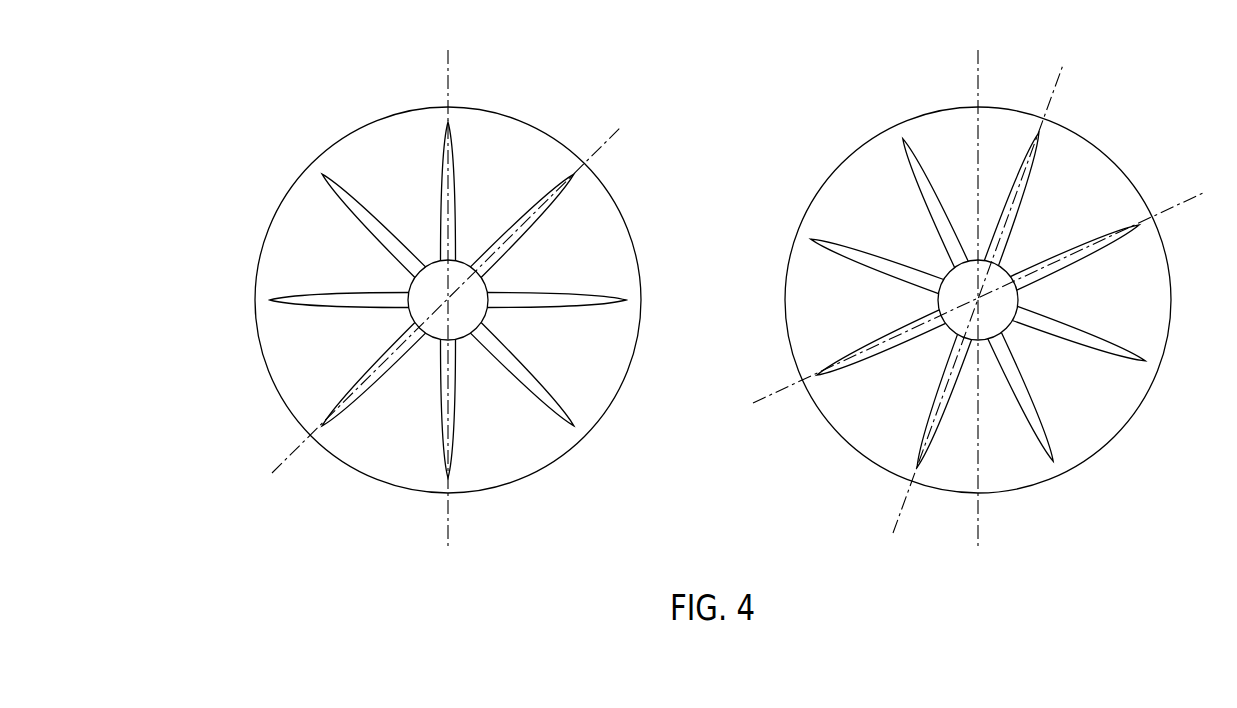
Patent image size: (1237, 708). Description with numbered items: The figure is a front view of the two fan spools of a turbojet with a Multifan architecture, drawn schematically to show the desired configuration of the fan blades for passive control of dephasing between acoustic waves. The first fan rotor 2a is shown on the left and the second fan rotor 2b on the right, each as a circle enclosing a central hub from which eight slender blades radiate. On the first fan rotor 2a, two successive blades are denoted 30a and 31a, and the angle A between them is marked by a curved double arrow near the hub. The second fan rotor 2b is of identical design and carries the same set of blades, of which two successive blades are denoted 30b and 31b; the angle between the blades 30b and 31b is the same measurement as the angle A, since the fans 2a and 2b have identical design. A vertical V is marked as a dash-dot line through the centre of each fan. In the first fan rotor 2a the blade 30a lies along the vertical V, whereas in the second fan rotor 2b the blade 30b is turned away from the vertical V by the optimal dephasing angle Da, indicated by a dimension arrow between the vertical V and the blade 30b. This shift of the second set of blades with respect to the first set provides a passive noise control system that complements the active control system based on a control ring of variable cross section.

The first fan rotor 2a is at (245, 174).
The second fan rotor 2b is at (796, 164).
The blade 30a is at (459, 136).
The blade 31a is at (578, 199).
The blade 30b is at (1052, 152).
The blade 31b is at (1122, 253).
The vertical V is at (447, 62).
The angle A is at (452, 222).
The optimal dephasing angle Da is at (1024, 152).